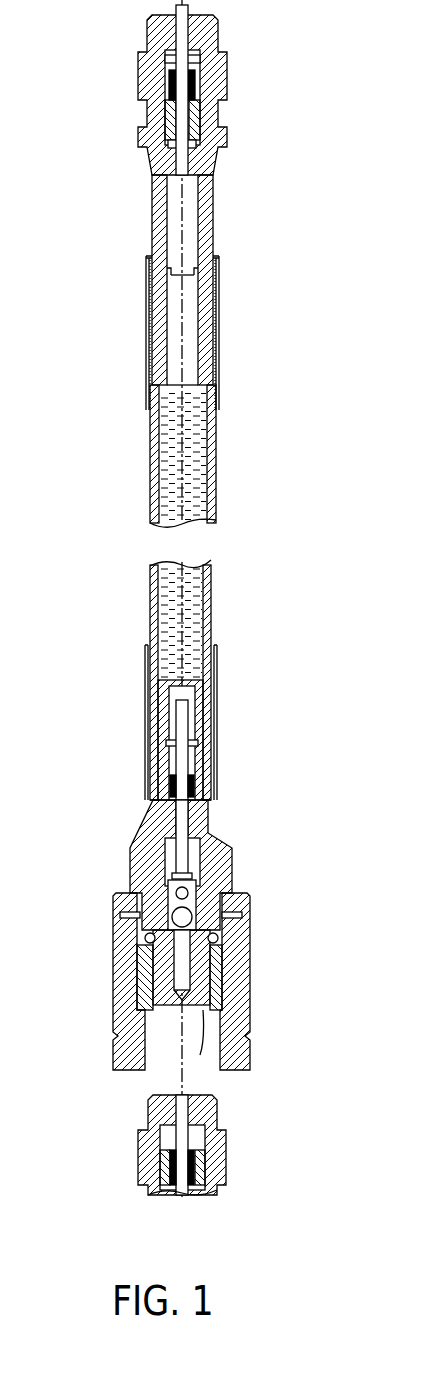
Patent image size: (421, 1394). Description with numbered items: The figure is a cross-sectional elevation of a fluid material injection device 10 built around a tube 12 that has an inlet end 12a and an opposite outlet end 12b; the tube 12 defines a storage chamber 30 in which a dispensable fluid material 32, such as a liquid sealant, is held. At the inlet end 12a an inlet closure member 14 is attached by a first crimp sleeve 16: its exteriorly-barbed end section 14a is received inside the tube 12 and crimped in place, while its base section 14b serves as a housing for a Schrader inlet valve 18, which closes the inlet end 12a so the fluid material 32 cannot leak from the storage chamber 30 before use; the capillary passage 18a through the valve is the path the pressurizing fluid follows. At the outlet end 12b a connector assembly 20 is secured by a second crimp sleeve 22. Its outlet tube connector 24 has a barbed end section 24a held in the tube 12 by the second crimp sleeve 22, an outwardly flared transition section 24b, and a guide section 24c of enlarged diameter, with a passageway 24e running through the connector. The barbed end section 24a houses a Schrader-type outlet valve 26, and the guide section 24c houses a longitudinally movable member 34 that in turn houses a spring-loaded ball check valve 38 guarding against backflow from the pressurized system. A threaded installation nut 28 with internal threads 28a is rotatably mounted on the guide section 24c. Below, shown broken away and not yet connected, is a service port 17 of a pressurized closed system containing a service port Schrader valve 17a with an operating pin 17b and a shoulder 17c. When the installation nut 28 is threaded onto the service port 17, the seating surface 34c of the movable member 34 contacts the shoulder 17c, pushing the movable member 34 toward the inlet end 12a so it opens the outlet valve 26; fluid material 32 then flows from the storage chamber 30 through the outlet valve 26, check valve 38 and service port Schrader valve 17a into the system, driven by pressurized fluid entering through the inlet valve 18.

The fluid material injection device 10 is at (128, 462).
The tube 12 is at (207, 463).
The inlet end 12a is at (152, 250).
The outlet end 12b is at (158, 802).
The inlet closure member 14 is at (170, 194).
The exteriorly-barbed end section 14a is at (200, 280).
The base section 14b is at (218, 115).
The first crimp sleeve 16 is at (146, 345).
The service port 17 is at (171, 1167).
The service port Schrader valve 17a is at (172, 1195).
The operating pin 17b is at (188, 1110).
The shoulder 17c is at (207, 1100).
The Schrader inlet valve 18 is at (196, 84).
The capillary 18a is at (188, 34).
The connector assembly 20 is at (170, 959).
The second crimp sleeve 22 is at (217, 727).
The outlet tube connector 24 is at (170, 805).
The barbed end section 24a is at (162, 693).
The outwardly flared transition section 24b is at (228, 845).
The guide section 24c is at (204, 893).
The passageway 24e is at (168, 868).
The outlet valve 26 is at (195, 817).
The threaded installation nut 28 is at (250, 962).
The threads 28a is at (118, 1052).
The storage chamber 30 is at (182, 535).
The dispensable fluid material 32 is at (195, 490).
The movable member 34 is at (205, 892).
The seating surface 34c is at (200, 1043).
The check valve 38 is at (145, 975).